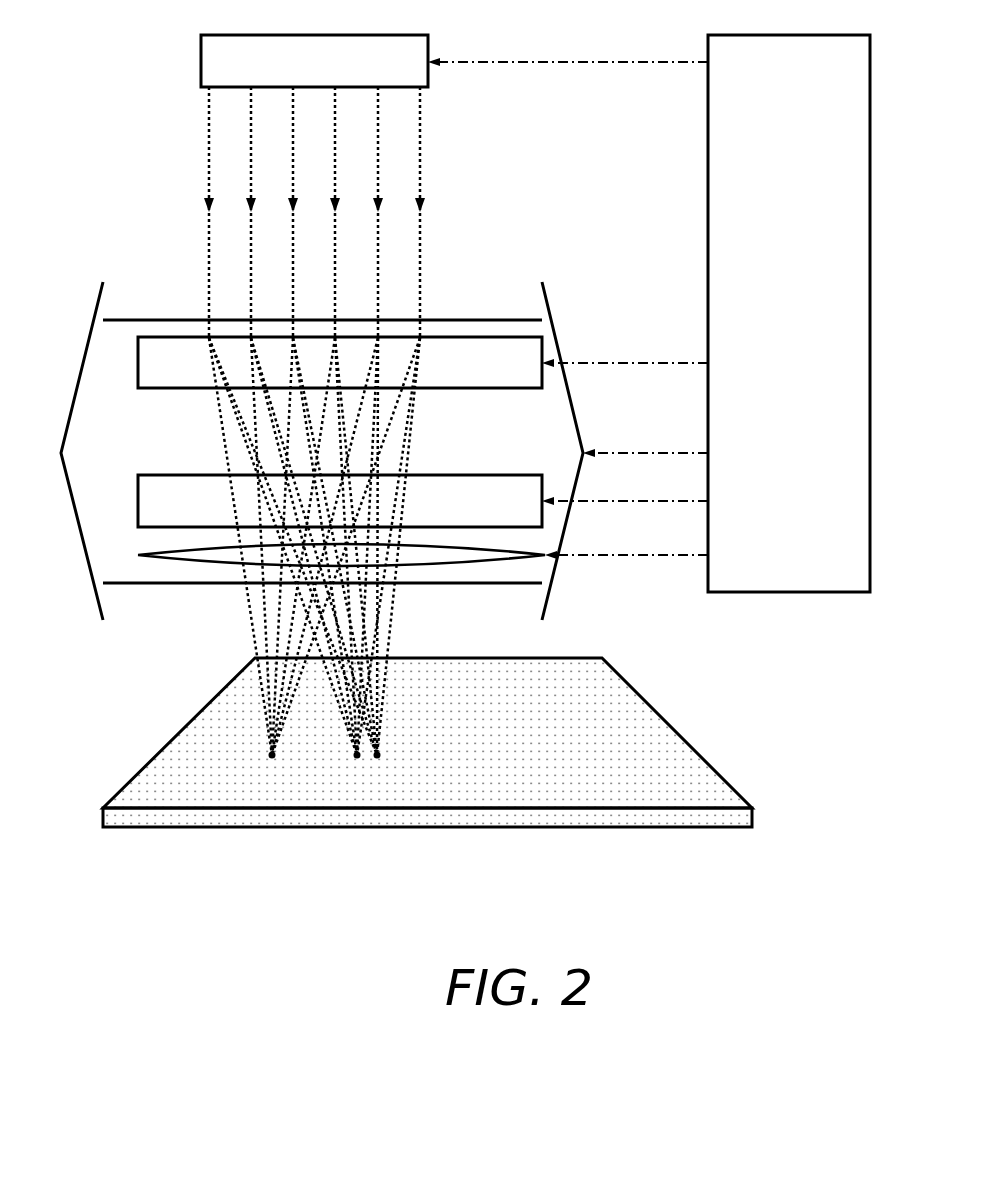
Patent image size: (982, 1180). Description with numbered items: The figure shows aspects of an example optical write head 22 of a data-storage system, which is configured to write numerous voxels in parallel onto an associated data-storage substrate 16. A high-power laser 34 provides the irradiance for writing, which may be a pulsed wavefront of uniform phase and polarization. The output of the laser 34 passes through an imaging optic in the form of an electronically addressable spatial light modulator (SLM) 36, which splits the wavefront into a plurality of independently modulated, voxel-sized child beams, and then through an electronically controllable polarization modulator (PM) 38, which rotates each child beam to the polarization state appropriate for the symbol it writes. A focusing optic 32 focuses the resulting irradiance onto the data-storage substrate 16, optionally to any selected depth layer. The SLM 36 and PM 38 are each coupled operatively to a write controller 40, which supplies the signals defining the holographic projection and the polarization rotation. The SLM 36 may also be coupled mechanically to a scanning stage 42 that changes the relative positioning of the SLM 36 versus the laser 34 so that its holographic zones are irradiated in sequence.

The optical write head 22 is at (66, 129).
The high-power laser 34 is at (362, 74).
The write controller 40 is at (801, 354).
The scanning stage 42 is at (167, 464).
The spatial light modulator (SLM) 36 is at (522, 376).
The polarization modulator (PM) 38 is at (522, 513).
The focusing optic 32 is at (138, 555).
The data-storage substrate 16 is at (677, 800).